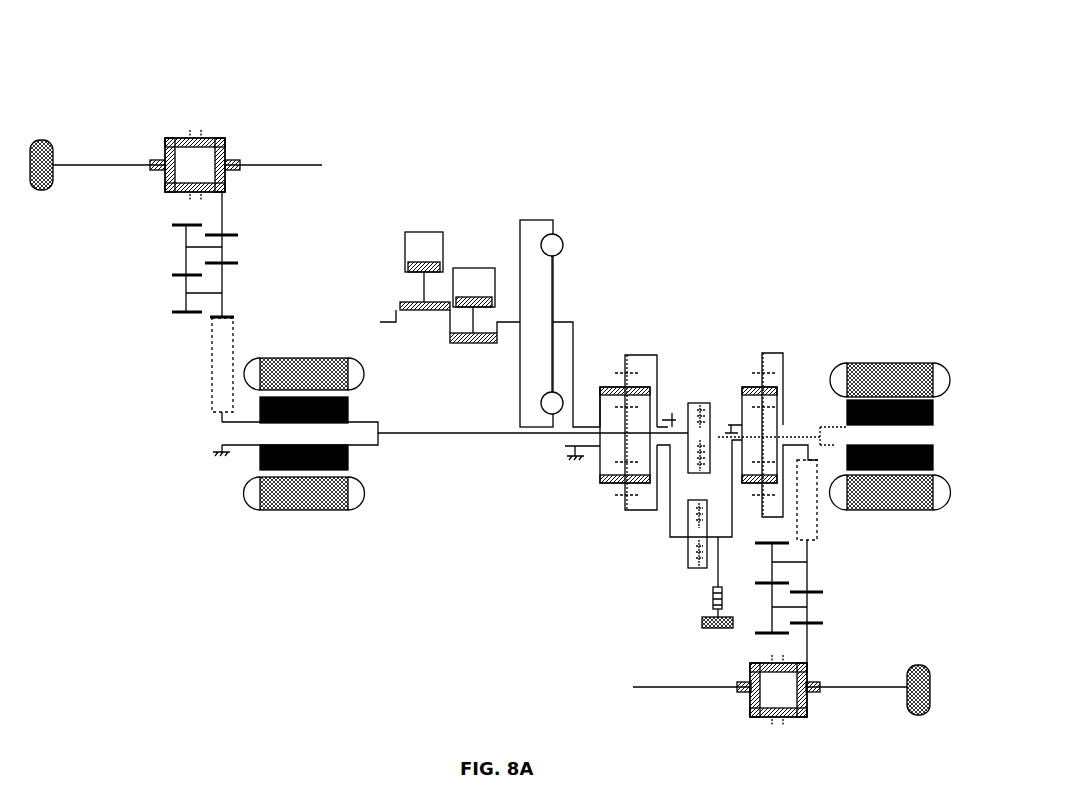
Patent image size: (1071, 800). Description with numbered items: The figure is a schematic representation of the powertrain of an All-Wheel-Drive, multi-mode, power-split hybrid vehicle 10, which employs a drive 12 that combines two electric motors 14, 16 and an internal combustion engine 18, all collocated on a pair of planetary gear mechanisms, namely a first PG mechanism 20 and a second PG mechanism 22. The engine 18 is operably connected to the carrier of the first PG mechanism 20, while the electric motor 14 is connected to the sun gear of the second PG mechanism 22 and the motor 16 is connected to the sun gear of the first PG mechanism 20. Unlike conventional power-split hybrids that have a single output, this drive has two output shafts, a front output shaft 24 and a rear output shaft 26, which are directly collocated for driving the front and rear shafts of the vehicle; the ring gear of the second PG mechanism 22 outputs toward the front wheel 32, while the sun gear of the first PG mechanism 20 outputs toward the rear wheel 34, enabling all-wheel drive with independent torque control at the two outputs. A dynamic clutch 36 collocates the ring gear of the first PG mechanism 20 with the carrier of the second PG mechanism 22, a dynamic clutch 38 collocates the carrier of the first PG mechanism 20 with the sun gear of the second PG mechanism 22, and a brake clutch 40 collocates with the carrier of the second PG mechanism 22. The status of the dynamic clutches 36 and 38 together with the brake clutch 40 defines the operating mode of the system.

The vehicle 10 is at (829, 34).
The drive 12 is at (735, 213).
The electric motor 14 is at (880, 363).
The electric motor 16 is at (290, 356).
The internal combustion engine 18 is at (497, 214).
The first planetary gear mechanism 20 is at (632, 312).
The second planetary gear mechanism 22 is at (768, 323).
The front output shaft 24 is at (849, 578).
The rear output shaft 26 is at (282, 248).
The front wheel 32 is at (920, 658).
The rear wheel 34 is at (38, 196).
The dynamic clutch 36 is at (680, 553).
The dynamic clutch 38 is at (697, 365).
The brake clutch 40 is at (692, 628).